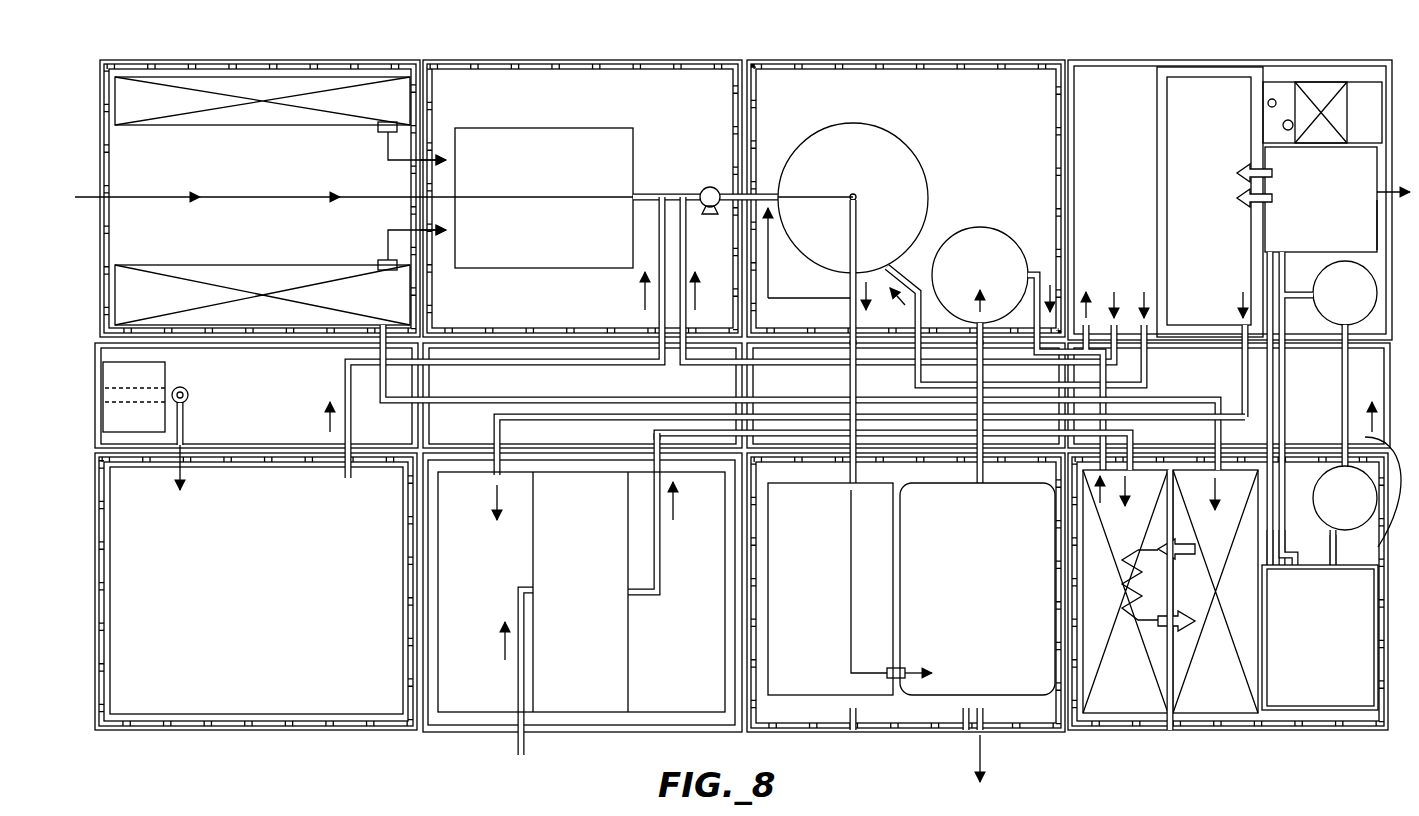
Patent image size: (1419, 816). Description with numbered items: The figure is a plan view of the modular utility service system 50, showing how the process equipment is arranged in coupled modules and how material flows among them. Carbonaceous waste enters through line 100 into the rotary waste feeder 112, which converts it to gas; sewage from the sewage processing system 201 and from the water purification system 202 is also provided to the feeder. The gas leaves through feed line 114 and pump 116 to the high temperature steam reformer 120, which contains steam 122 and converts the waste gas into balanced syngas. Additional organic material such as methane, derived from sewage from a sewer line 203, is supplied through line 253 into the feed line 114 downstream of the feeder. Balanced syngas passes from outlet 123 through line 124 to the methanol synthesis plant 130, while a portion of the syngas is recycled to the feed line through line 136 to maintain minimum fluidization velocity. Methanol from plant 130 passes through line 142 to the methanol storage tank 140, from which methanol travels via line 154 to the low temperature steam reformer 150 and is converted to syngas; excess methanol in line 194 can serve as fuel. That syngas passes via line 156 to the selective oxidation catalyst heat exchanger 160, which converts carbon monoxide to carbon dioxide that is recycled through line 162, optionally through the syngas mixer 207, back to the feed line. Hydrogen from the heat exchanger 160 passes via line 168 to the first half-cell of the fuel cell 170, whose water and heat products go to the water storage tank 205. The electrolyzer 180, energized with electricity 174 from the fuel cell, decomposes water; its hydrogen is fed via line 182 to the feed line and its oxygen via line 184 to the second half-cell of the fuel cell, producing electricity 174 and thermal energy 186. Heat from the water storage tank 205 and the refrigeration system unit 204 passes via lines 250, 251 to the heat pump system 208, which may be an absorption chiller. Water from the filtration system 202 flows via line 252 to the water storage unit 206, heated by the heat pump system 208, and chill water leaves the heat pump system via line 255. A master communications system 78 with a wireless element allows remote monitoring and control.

The utility service system 50 is at (248, 764).
The master communications system 78 is at (1360, 85).
The line 100 is at (296, 196).
The rotary waste feeder 112 is at (545, 128).
The feed line 114 is at (645, 192).
The pump 116 is at (708, 186).
The high temperature steam reformer 120 is at (882, 126).
The steam 122 is at (887, 195).
The outlet 123 is at (858, 275).
The line 124 is at (846, 372).
The methanol synthesis plant 130 is at (830, 589).
The line 136 is at (772, 260).
The methanol storage tank 140 is at (977, 589).
The line 142 is at (893, 680).
The low temperature steam reformer 150 is at (975, 228).
The line 154 is at (985, 490).
The line 156 is at (1050, 262).
The selective oxidation catalyst heat exchanger 160 is at (1115, 217).
The line 162 is at (1369, 479).
The line 168 is at (1180, 350).
The fuel cell 170 is at (1337, 199).
The electricity 174 is at (1370, 222).
The electrolyzer 180 is at (1320, 637).
The line 182 is at (1320, 560).
The line 184 is at (1293, 570).
The thermal energy 186 is at (1262, 205).
The line 194 is at (984, 720).
The sewage processing system 201 is at (205, 125).
The water purification system 202 is at (205, 270).
The sewer line 203 is at (188, 390).
The refrigeration system unit 204 is at (581, 592).
The water storage tank 205 is at (1210, 202).
The water storage unit 206 is at (1166, 722).
The syngas mixer 207 is at (1345, 515).
The heat pump system 208 is at (1230, 482).
The line 250 is at (1272, 580).
The line 251 is at (660, 575).
The line 252 is at (492, 412).
The line 253 is at (343, 390).
The line 255 is at (583, 428).